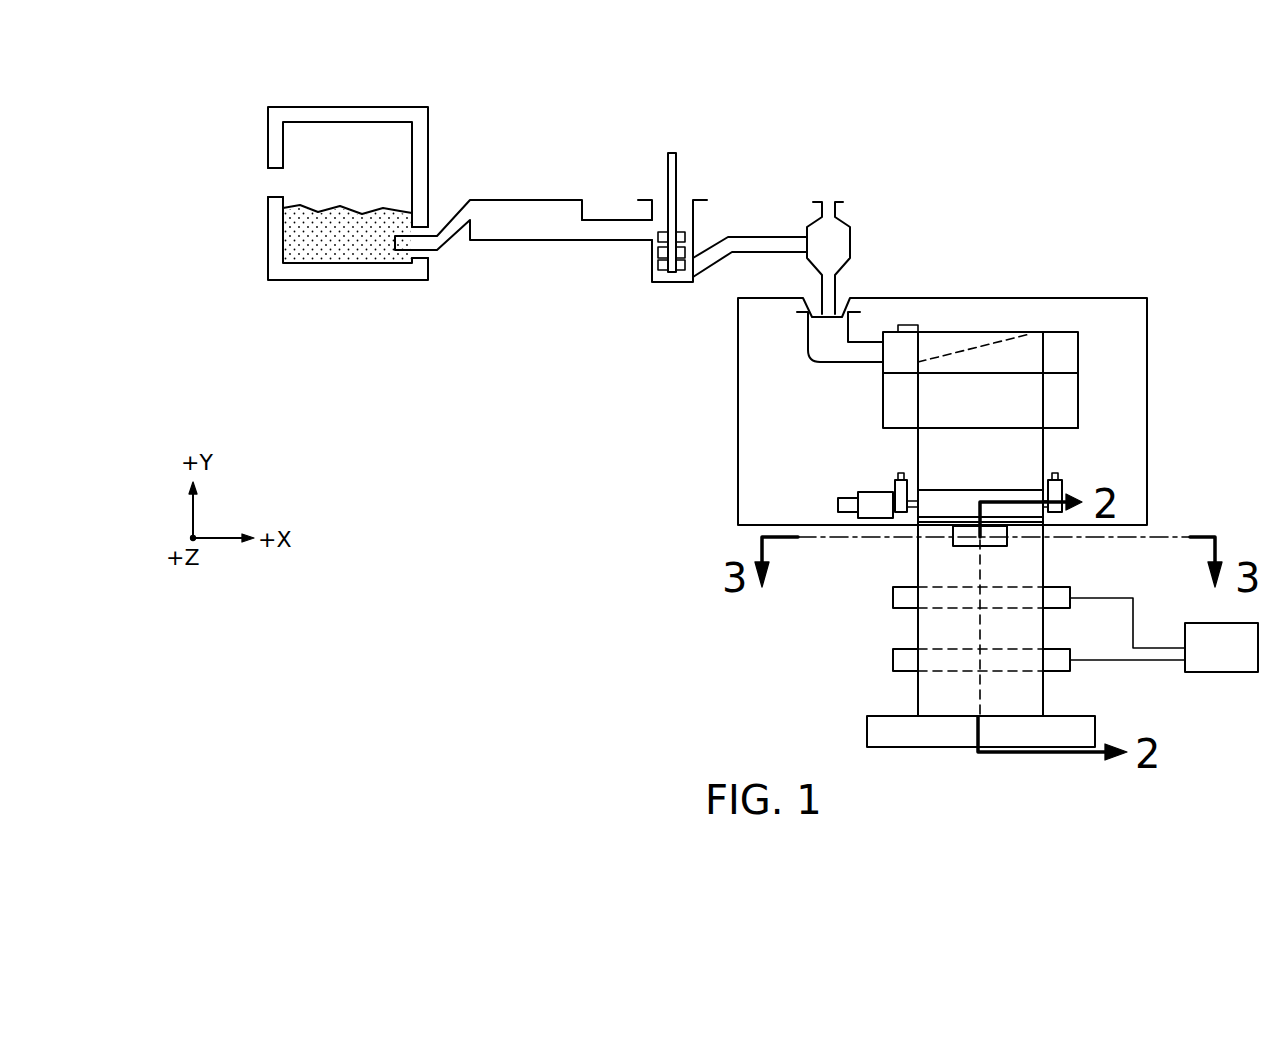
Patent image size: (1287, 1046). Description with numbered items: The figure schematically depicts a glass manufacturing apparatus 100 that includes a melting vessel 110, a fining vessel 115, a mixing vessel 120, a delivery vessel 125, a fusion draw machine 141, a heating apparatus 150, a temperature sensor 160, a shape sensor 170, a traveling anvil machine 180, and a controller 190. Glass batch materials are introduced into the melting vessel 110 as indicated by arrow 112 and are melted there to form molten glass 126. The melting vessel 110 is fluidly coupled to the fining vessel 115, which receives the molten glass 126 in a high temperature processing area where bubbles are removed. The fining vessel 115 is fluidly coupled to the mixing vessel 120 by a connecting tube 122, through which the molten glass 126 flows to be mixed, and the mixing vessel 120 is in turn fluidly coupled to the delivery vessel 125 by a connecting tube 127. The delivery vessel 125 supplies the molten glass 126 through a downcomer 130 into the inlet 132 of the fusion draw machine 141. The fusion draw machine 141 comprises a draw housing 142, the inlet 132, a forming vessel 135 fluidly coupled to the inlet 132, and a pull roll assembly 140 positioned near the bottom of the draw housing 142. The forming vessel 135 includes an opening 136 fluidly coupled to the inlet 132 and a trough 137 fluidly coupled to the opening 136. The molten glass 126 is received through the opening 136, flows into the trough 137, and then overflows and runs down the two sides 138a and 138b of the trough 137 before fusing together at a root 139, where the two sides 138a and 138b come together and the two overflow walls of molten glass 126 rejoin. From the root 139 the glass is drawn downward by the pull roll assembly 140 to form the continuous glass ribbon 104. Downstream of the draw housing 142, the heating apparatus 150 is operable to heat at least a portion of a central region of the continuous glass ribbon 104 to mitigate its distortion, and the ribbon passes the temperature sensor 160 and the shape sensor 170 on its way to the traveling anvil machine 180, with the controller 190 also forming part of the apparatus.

The glass manufacturing apparatus 100 is at (1131, 170).
The continuous glass ribbon 104 is at (918, 556).
The melting vessel 110 is at (268, 130).
The arrow 112 is at (270, 181).
The fining vessel 115 is at (510, 199).
The mixing vessel 120 is at (700, 224).
The connecting tube 122 is at (605, 240).
The delivery vessel 125 is at (850, 243).
The molten glass 126 is at (381, 212).
The connecting tube 127 is at (750, 258).
The downcomer 130 is at (838, 290).
The inlet 132 is at (808, 352).
The forming vessel 135 is at (1078, 347).
The opening 136 is at (883, 365).
The trough 137 is at (985, 338).
The side 138a is at (918, 418).
The side 138b is at (1078, 397).
The root 139 is at (963, 432).
The pull roll assembly 140 is at (1066, 487).
The fusion draw machine 141 is at (704, 412).
The draw housing 142 is at (738, 476).
The heating apparatus 150 is at (1025, 550).
The temperature sensor 160 is at (893, 598).
The shape sensor 170 is at (893, 660).
The traveling anvil machine 180 is at (867, 722).
The controller 190 is at (1220, 672).